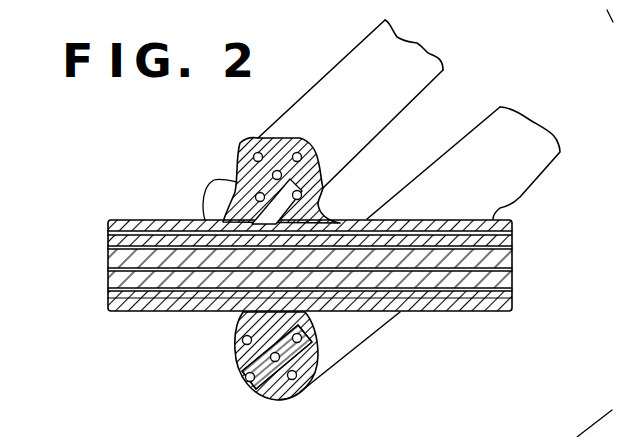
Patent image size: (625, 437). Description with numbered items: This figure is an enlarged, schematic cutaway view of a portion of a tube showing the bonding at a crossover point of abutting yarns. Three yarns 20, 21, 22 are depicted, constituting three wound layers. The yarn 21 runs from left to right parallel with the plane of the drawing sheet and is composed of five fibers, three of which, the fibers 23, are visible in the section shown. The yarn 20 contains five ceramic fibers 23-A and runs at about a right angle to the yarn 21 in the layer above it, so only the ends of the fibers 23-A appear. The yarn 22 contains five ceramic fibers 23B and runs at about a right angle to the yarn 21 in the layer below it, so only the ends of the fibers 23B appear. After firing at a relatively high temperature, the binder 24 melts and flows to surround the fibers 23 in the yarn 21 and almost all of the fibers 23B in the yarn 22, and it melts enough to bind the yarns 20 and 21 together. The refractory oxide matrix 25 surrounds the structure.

The yarn 20 is at (433, 53).
The yarn 21 is at (513, 259).
The yarn 22 is at (537, 125).
The fibers 23 is at (108, 238).
The ceramic fibers 23-A is at (238, 172).
The ceramic fibers 23B is at (305, 354).
The binder 24 is at (140, 277).
The refractory oxide matrix 25 is at (212, 181).